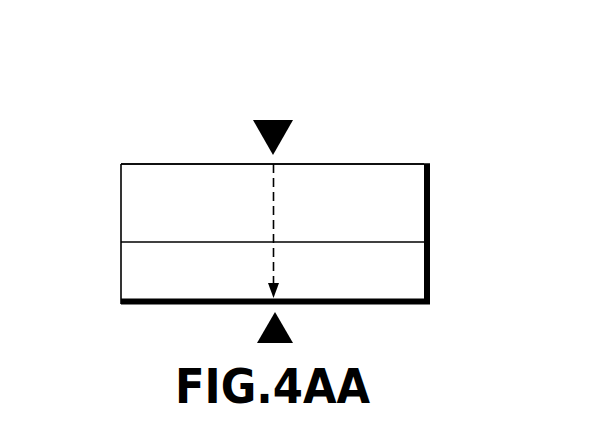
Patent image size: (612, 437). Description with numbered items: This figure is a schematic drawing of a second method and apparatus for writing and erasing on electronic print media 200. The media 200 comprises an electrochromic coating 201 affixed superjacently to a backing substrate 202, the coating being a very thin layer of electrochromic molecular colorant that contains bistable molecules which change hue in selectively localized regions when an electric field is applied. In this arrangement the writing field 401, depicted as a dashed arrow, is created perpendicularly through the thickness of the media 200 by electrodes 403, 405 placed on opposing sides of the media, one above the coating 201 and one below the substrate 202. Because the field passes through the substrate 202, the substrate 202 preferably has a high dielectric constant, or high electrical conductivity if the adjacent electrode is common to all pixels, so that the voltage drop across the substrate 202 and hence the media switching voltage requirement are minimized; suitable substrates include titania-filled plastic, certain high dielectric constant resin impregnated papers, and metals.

The electronic print media 200 is at (124, 124).
The electrochromic coating 201 is at (430, 207).
The backing substrate 202 is at (430, 272).
The writing field 401 is at (274, 210).
The electrode 403 is at (273, 120).
The electrode 405 is at (258, 333).